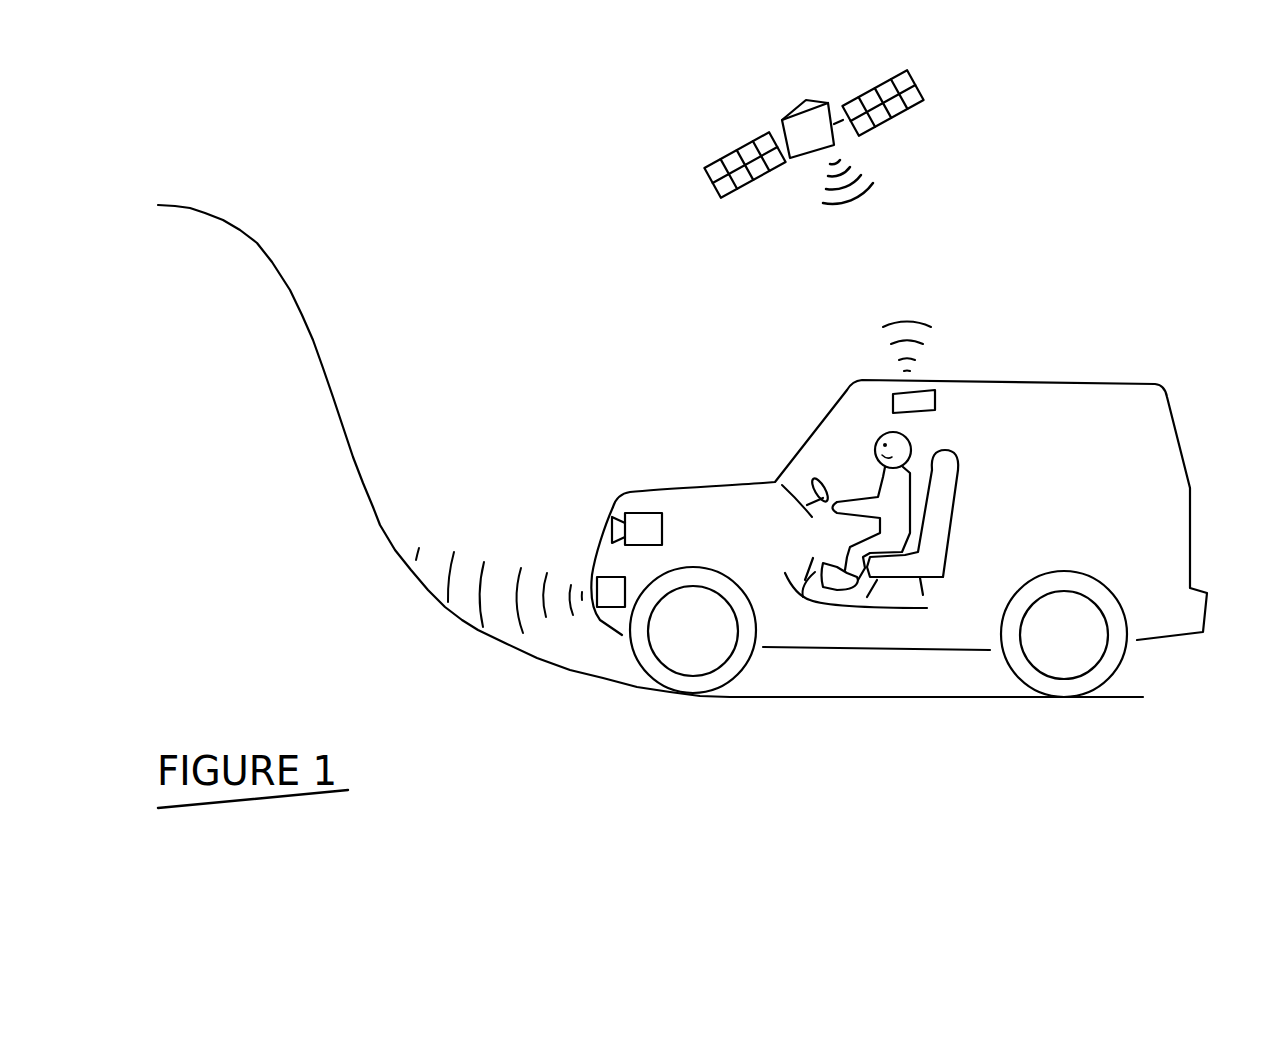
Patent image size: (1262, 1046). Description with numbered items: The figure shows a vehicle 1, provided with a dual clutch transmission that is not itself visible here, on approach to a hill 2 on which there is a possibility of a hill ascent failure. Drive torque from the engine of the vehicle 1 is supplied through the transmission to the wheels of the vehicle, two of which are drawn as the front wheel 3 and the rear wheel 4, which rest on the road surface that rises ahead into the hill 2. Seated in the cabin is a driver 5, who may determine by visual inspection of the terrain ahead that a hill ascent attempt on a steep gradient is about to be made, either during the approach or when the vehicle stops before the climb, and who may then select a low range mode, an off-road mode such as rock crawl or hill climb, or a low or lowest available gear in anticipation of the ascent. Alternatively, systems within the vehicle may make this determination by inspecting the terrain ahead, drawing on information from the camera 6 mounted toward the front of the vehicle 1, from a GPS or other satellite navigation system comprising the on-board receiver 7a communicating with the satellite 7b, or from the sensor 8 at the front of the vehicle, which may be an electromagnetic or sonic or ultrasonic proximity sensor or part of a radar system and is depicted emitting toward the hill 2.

The vehicle 1 is at (1110, 363).
The hill 2 is at (342, 378).
The wheel 3 is at (750, 667).
The wheel 4 is at (1115, 670).
The driver 5 is at (923, 442).
The camera 6 is at (641, 510).
The GPS or other satellite navigation system 7a is at (932, 382).
The GPS or other satellite navigation system 7b is at (878, 147).
The sensor 8 is at (608, 613).